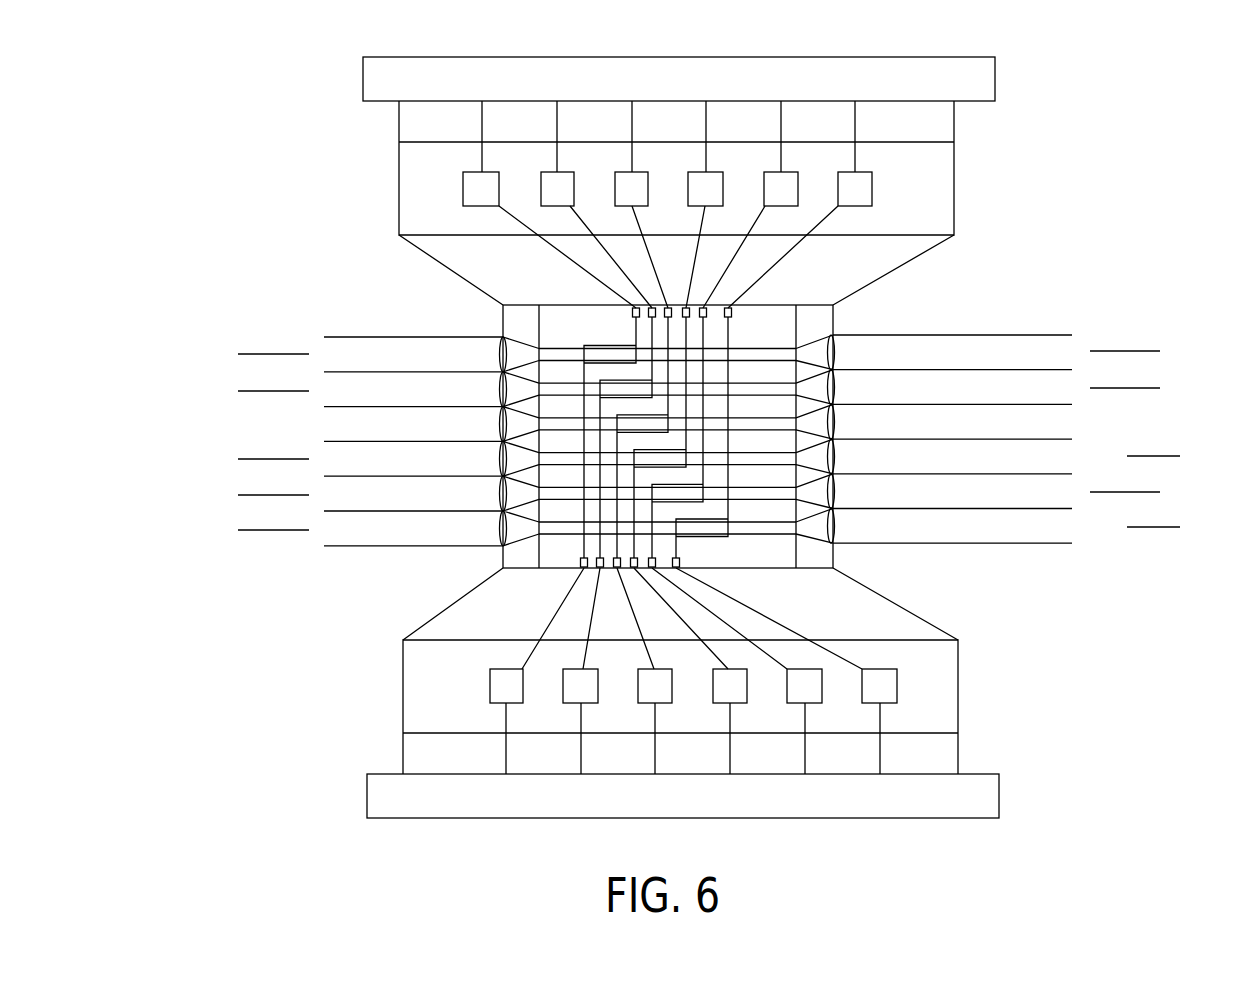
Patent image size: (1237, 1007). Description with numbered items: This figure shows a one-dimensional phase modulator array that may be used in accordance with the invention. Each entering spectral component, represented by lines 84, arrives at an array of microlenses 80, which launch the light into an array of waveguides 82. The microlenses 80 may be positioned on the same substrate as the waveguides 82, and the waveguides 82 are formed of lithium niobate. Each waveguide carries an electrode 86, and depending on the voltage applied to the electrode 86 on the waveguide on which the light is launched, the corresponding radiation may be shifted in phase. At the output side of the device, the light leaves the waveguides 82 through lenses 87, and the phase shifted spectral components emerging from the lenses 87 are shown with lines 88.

The microlenses 80 is at (500, 528).
The waveguides 82 is at (762, 492).
The lines 84 is at (267, 390).
The electrode 86 is at (602, 368).
The lenses 87 is at (834, 492).
The lines 88 is at (1142, 388).